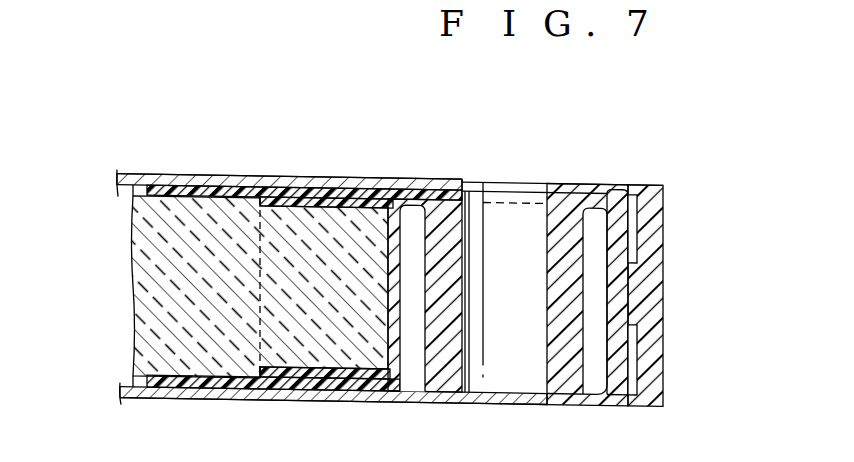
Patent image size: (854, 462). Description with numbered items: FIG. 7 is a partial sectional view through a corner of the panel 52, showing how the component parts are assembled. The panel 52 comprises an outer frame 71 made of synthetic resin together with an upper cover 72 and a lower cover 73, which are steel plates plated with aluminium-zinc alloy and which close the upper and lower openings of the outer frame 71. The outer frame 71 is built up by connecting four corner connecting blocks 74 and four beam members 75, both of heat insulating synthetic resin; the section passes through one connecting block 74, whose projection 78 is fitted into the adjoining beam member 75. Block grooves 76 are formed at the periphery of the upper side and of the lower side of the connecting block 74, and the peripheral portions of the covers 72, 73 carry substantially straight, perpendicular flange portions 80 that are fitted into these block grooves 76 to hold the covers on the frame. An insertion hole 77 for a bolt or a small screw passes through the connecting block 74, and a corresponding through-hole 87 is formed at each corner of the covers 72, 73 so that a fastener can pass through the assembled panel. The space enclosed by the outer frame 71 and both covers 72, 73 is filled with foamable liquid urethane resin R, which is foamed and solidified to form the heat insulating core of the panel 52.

The panel 52 is at (361, 131).
The urethane resin R is at (153, 258).
The outer frame 71 is at (287, 174).
The upper cover 72 is at (163, 175).
The lower cover 73 is at (150, 403).
The connecting block 74 is at (664, 280).
The beam member 75 is at (236, 188).
The block groove 76 is at (656, 210).
The insertion hole 77 is at (540, 369).
The projection 78 is at (325, 178).
The flange portion 80 is at (631, 252).
The through-hole 87 is at (550, 184).